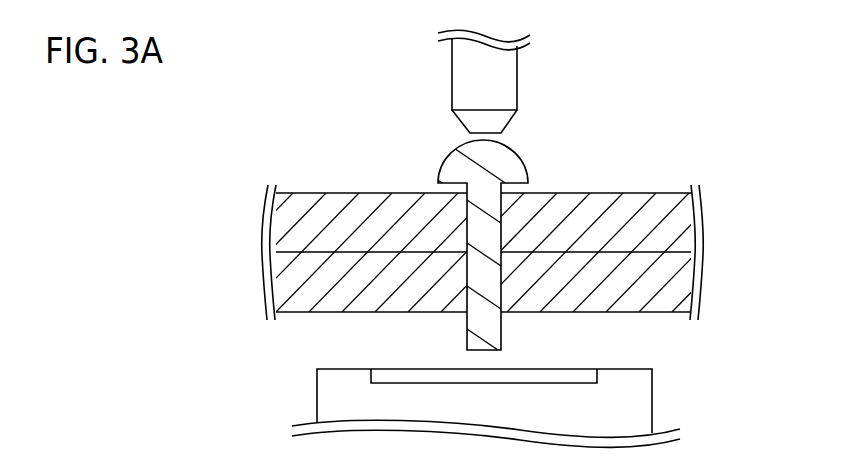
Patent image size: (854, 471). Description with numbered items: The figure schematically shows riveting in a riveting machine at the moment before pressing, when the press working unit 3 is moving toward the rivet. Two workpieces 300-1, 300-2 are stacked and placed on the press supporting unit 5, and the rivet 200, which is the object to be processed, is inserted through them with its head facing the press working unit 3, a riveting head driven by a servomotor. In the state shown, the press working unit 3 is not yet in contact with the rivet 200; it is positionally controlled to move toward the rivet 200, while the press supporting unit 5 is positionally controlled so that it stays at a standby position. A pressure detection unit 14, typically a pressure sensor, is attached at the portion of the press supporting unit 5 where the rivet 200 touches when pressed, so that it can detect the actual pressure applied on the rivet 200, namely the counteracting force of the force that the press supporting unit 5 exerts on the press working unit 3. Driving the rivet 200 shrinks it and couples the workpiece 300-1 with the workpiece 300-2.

The press working unit 3 is at (452, 72).
The rivet 200 is at (519, 149).
The workpiece 300-1 is at (628, 193).
The workpiece 300-2 is at (650, 313).
The press supporting unit 5 is at (317, 387).
The pressure detection unit 14 is at (403, 369).